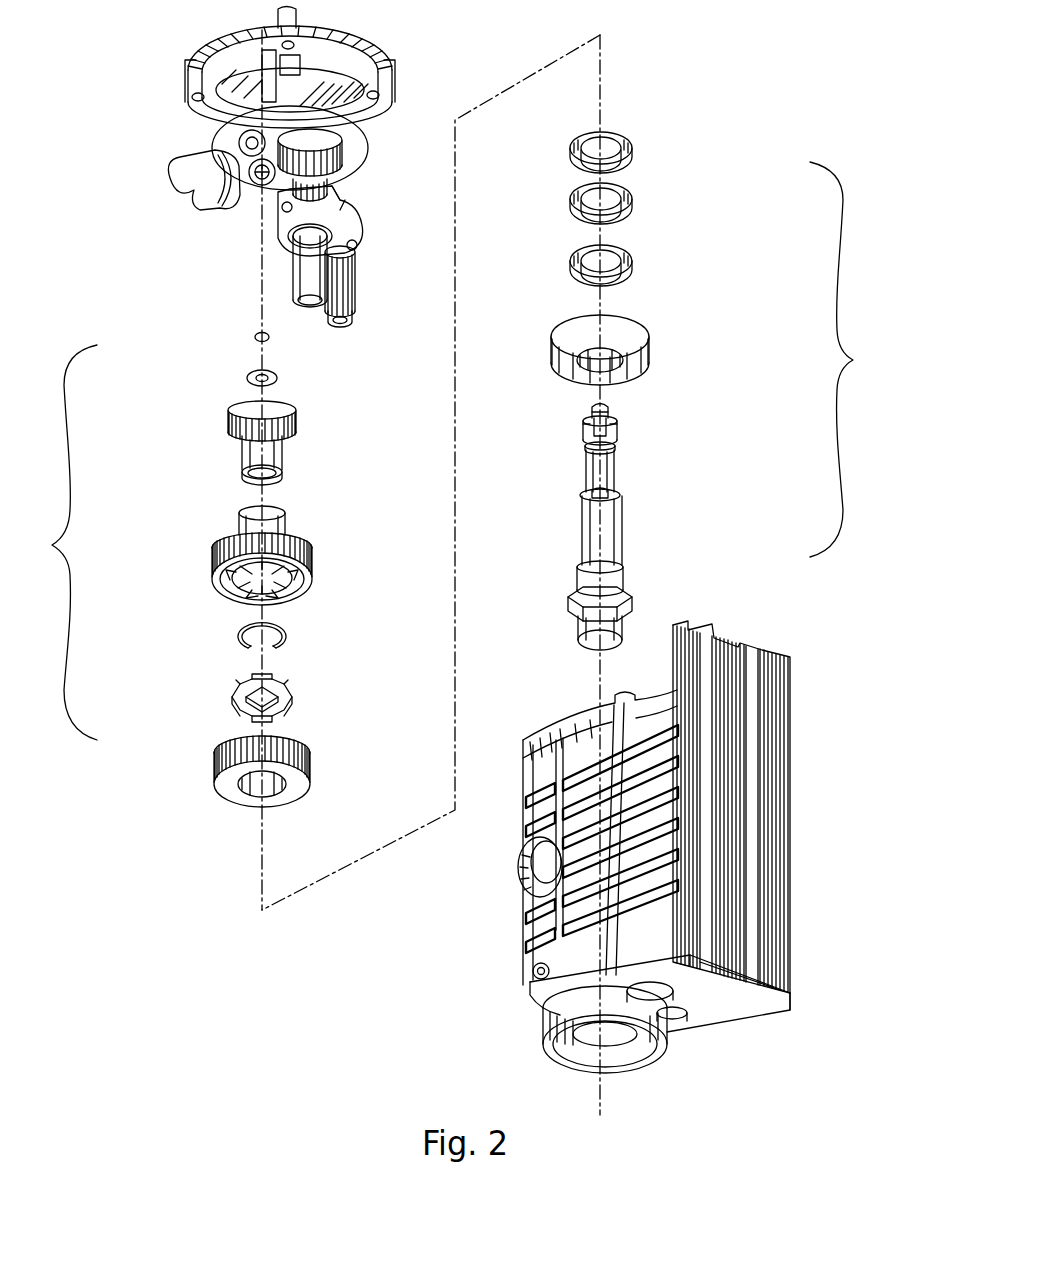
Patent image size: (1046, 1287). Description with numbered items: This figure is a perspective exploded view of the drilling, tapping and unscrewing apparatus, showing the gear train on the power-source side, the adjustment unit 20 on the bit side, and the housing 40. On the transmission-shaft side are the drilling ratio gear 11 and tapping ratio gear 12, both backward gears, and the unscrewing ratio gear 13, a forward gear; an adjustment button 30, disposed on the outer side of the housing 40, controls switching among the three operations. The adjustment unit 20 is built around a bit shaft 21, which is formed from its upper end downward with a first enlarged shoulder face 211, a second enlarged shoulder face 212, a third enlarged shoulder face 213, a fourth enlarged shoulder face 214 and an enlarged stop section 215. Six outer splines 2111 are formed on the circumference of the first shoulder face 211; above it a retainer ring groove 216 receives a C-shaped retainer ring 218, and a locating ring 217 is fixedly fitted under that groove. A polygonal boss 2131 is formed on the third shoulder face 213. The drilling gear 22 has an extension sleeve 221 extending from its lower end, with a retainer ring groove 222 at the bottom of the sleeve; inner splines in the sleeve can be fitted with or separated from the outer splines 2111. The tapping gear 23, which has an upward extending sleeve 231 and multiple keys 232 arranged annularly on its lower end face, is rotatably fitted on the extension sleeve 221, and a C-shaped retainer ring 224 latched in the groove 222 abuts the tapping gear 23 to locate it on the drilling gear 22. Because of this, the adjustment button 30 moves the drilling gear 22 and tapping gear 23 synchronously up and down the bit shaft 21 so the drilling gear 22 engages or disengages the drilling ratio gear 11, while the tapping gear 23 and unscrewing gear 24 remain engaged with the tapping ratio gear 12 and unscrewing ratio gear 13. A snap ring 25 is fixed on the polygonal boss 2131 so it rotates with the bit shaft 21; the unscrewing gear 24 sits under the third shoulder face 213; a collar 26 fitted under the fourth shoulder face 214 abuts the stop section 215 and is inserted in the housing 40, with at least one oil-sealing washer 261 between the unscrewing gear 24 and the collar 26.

The drilling ratio gear 11 is at (352, 156).
The tapping ratio gear 12 is at (352, 206).
The unscrewing ratio gear 13 is at (345, 270).
The adjustment unit 20 is at (455, 451).
The bit shaft 21 is at (630, 520).
The first enlarged shoulder face 211 is at (618, 426).
The outer splines 2111 is at (584, 427).
The second enlarged shoulder face 212 is at (617, 444).
The third enlarged shoulder face 213 is at (618, 507).
The polygonal boss 2131 is at (597, 494).
The fourth enlarged shoulder face 214 is at (622, 571).
The enlarged stop section 215 is at (574, 598).
The retainer ring groove 216 is at (594, 411).
The locating ring 217 is at (247, 378).
The C-shaped retainer ring 218 is at (255, 337).
The drilling gear 22 is at (271, 443).
The extension sleeve 221 is at (243, 456).
The retainer ring groove 222 is at (311, 469).
The C-shaped retainer ring 224 is at (290, 637).
The tapping gear 23 is at (267, 552).
The upward extending sleeve 231 is at (285, 526).
The keys 232 is at (298, 600).
The unscrewing gear 24 is at (218, 752).
The snap ring 25 is at (236, 696).
The collar 26 is at (650, 338).
The oil-sealing washer 261 is at (630, 258).
The adjustment button 30 is at (178, 158).
The housing 40 is at (790, 890).